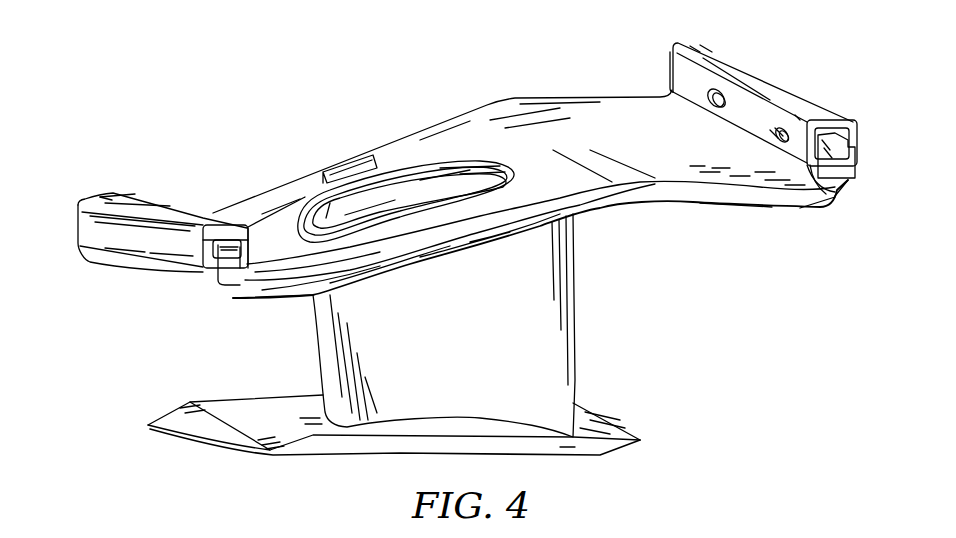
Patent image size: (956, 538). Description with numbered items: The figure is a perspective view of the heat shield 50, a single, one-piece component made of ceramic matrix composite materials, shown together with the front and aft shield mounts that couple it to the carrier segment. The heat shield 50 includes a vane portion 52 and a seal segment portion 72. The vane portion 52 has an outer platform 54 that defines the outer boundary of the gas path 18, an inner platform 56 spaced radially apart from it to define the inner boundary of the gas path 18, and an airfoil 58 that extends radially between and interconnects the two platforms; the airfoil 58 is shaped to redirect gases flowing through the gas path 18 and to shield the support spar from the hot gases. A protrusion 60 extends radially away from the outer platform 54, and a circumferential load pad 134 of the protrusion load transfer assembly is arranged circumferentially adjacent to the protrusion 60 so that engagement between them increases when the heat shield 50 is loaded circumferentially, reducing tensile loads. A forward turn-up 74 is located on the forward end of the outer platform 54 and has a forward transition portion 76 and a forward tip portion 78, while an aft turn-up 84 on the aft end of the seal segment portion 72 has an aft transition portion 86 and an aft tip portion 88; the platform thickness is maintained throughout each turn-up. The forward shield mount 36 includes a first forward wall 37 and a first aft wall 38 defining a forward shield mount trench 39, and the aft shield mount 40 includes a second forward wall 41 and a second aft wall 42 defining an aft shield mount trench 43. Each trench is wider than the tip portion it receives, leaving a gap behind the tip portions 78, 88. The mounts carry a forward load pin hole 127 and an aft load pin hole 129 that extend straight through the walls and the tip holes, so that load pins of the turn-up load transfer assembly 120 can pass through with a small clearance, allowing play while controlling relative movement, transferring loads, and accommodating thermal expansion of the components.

The gas path 18 is at (118, 390).
The forward shield mount 36 is at (100, 208).
The first forward wall 37 is at (187, 250).
The first aft wall 38 is at (253, 233).
The forward shield mount trench 39 is at (216, 264).
The aft shield mount 40 is at (800, 84).
The second forward wall 41 is at (823, 170).
The second aft wall 42 is at (860, 135).
The aft shield mount trench 43 is at (829, 158).
The heat shield 50 is at (129, 116).
The vane portion 52 is at (303, 165).
The outer platform 54 is at (463, 137).
The inner platform 56 is at (603, 455).
The airfoil 58 is at (585, 332).
The protrusion 60 is at (452, 188).
The seal segment portion 72 is at (772, 209).
The forward turn-up 74 is at (218, 317).
The forward transition portion 76 is at (267, 296).
The forward tip portion 78 is at (228, 262).
The aft turn-up 84 is at (836, 214).
The aft transition portion 86 is at (848, 185).
The aft tip portion 88 is at (848, 158).
The turn-up load transfer assembly 120 is at (100, 195).
The forward load pin hole 127 is at (178, 210).
The aft load pin hole 129 is at (707, 92).
The circumferential load pad 134 is at (367, 157).